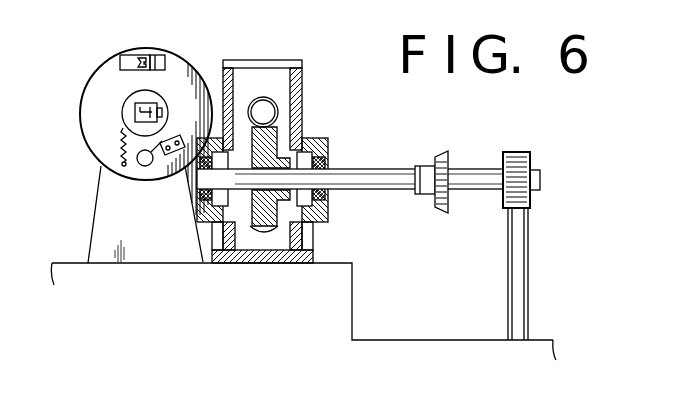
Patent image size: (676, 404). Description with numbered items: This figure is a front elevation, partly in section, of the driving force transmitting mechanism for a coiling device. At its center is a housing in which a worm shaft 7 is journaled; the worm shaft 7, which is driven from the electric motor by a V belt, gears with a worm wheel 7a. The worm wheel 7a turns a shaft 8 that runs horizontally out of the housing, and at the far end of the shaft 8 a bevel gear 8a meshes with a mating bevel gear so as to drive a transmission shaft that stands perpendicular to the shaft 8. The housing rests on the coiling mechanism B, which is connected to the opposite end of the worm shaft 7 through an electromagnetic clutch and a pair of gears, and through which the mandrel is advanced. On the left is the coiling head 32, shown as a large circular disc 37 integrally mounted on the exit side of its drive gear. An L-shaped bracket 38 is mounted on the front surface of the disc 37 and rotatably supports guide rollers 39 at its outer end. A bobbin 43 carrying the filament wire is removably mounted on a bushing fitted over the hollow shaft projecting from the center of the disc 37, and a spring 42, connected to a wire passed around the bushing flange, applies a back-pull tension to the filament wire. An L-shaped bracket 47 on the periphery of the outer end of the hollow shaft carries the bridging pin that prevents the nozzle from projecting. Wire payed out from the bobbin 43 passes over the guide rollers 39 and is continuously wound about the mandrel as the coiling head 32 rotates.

The worm shaft 7 is at (268, 106).
The worm wheel 7a is at (278, 133).
The shaft 8 is at (382, 184).
The bevel gear 8a is at (444, 160).
The coiling head 32 is at (126, 102).
The circular disc 37 is at (102, 146).
The L-shaped bracket 38 is at (127, 59).
The guide rollers 39 is at (153, 57).
The spring 42 is at (116, 172).
The bobbin 43 is at (133, 106).
The L-shaped bracket 47 is at (155, 108).
The coiling mechanism B is at (271, 260).